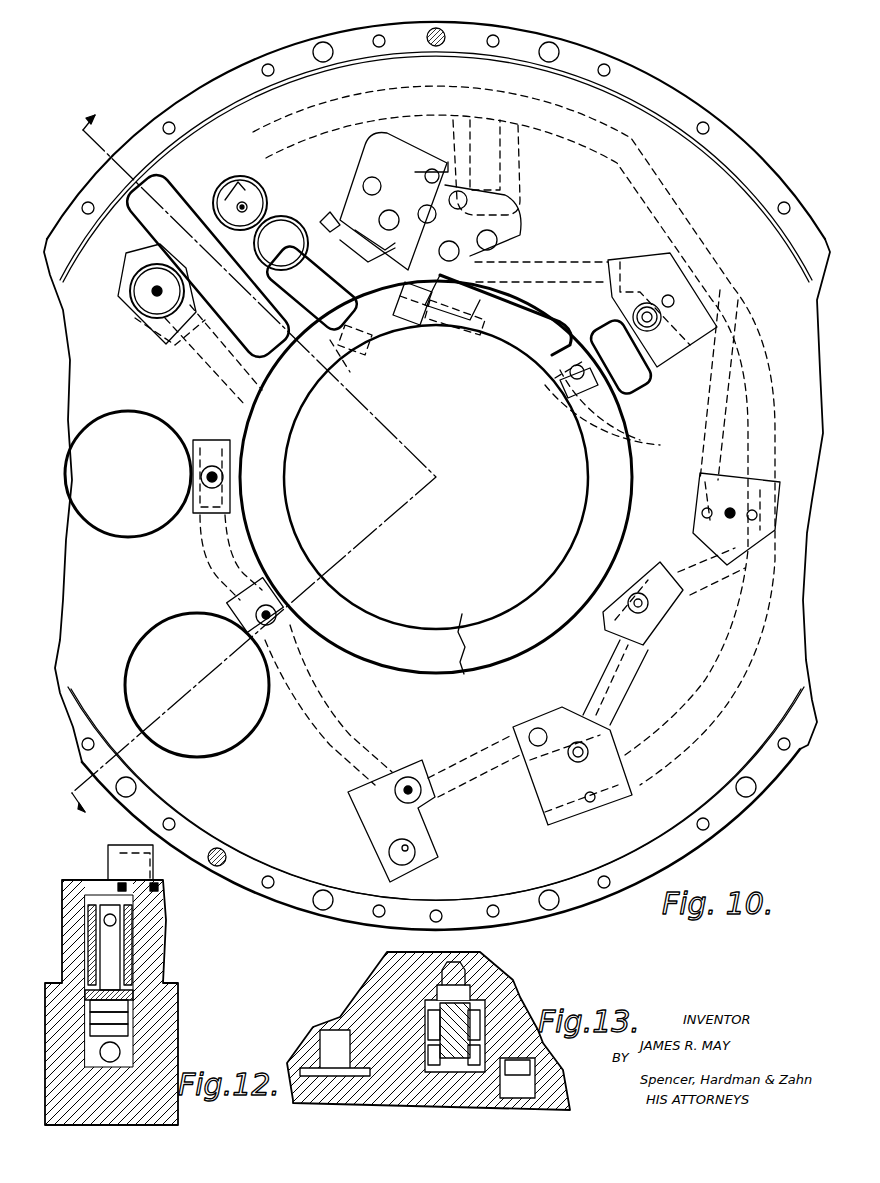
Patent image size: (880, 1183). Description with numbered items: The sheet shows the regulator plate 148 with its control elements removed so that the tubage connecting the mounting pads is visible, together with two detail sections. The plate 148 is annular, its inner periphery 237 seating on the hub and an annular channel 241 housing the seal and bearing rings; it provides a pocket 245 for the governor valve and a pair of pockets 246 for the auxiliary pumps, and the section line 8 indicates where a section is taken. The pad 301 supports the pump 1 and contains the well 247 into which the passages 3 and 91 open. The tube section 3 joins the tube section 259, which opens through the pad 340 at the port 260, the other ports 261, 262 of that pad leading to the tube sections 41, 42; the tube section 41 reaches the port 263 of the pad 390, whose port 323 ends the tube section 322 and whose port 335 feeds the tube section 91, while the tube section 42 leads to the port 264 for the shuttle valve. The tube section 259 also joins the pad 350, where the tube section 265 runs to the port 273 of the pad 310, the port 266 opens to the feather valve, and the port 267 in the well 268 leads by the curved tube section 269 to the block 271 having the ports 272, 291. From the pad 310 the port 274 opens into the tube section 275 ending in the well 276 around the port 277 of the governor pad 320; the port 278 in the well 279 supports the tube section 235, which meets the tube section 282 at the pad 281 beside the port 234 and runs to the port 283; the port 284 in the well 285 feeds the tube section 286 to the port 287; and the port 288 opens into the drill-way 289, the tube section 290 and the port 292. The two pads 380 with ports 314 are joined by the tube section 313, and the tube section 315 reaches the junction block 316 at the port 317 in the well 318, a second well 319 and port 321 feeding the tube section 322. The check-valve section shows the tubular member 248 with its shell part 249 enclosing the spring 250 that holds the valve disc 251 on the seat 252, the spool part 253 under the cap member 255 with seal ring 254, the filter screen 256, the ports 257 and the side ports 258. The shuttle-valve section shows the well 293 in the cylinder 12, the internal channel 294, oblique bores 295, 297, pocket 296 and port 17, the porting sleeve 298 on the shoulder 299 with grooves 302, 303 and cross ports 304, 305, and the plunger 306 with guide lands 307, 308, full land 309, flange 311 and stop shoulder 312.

In FIG. 10, the regulator plate 148 is at (635, 112).
In FIG. 10, the section line 8- 8 is at (254, 466).
In FIG. 10, the tube section 275 is at (376, 90).
In FIG. 10, the well 276 is at (242, 202).
In FIG. 10, the pad 320 is at (228, 190).
In FIG. 10, the port 277 is at (232, 205).
In FIG. 10, the port 283 is at (365, 178).
In FIG. 13, the port 283 is at (330, 1090).
In FIG. 10, the port 292 is at (432, 169).
In FIG. 13, the port 292 is at (455, 1098).
In FIG. 10, the tube section 286 is at (330, 215).
In FIG. 10, the port 287 is at (395, 212).
In FIG. 10, the port 264 is at (462, 196).
In FIG. 13, the port 264 is at (555, 1085).
In FIG. 10, the mounting pad 310 is at (520, 212).
In FIG. 13, the mounting pad 310 is at (365, 1095).
In FIG. 10, the pocket 245 is at (150, 228).
In FIG. 10, the port 288 is at (380, 240).
In FIG. 10, the drill-way 289 is at (372, 252).
In FIG. 10, the port 274 is at (493, 238).
In FIG. 10, the port 273 is at (455, 252).
In FIG. 10, the tube section 265 is at (572, 262).
In FIG. 10, the pad 350 is at (630, 258).
In FIG. 10, the port 266 is at (670, 298).
In FIG. 10, the port 267 is at (660, 310).
In FIG. 10, the well 268 is at (660, 318).
In FIG. 10, the tube section 42 is at (740, 355).
In FIG. 10, the well 279 is at (132, 292).
In FIG. 10, the well 285 is at (290, 262).
In FIG. 10, the port 284 is at (299, 287).
In FIG. 10, the port 278 is at (135, 325).
In FIG. 10, the tube section 282 is at (345, 312).
In FIG. 10, the pad 281 is at (360, 345).
In FIG. 10, the port 234 is at (342, 372).
In FIG. 10, the tube section 290 is at (470, 330).
In FIG. 10, the port 291 is at (500, 345).
In FIG. 10, the port 272 is at (552, 378).
In FIG. 10, the block 271 is at (585, 392).
In FIG. 10, the tube section 269 is at (655, 425).
In FIG. 10, the tube section 259 is at (762, 425).
In FIG. 10, the tube section 235 is at (217, 377).
In FIG. 10, the pads 380 is at (210, 445).
In FIG. 10, the ports 314 is at (223, 475).
In FIG. 10, the pockets 246 is at (112, 540).
In FIG. 10, the tube section 313 is at (200, 548).
In FIG. 10, the inner periphery 237 is at (405, 627).
In FIG. 10, the annular channel 241 is at (462, 614).
In FIG. 10, the tube section 315 is at (330, 718).
In FIG. 10, the port 321 is at (412, 782).
In FIG. 10, the tube section 322 is at (478, 745).
In FIG. 10, the port 323 is at (540, 730).
In FIG. 10, the port 335 is at (588, 750).
In FIG. 10, the pad 390 is at (530, 762).
In FIG. 10, the port 263 is at (592, 802).
In FIG. 10, the tube section 91 is at (617, 690).
In FIG. 10, the tube section 41 is at (720, 735).
In FIG. 10, the tube section 3 is at (705, 572).
In FIG. 10, the well 247 is at (637, 590).
In FIG. 12, the well 247 is at (120, 1050).
In FIG. 10, the pad 301 is at (665, 608).
In FIG. 12, the pad 301 is at (145, 1065).
In FIG. 10, the pad 340 is at (775, 480).
In FIG. 10, the port 262 is at (703, 510).
In FIG. 10, the port 261 is at (730, 507).
In FIG. 10, the port 260 is at (756, 518).
In FIG. 10, the junction block 316 is at (365, 820).
In FIG. 10, the well 319 is at (418, 798).
In FIG. 10, the port 317 is at (410, 855).
In FIG. 10, the well 318 is at (402, 865).
In FIG. 12, the pump 1 is at (166, 925).
In FIG. 12, the seal ring 254 is at (105, 848).
In FIG. 12, the cap member 255 is at (78, 868).
In FIG. 12, the filter screen 256 is at (80, 882).
In FIG. 12, the spool part 253 is at (158, 888).
In FIG. 12, the ports 257 is at (128, 945).
In FIG. 12, the tubular member 248 is at (125, 960).
In FIG. 12, the seat 252 is at (130, 996).
In FIG. 12, the valve disc 251 is at (128, 1006).
In FIG. 12, the spring 250 is at (128, 1018).
In FIG. 12, the shell part 249 is at (128, 1030).
In FIG. 12, the side ports 258 is at (70, 1030).
In FIG. 13, the cylinder 12 is at (480, 955).
In FIG. 13, the cross port 304 is at (420, 1048).
In FIG. 13, the porting sleeve 298 is at (448, 1068).
In FIG. 13, the shoulder 299 is at (515, 975).
In FIG. 13, the pocket 296 is at (545, 1058).
In FIG. 13, the guide land 308 is at (385, 985).
In FIG. 13, the cross port 305 is at (400, 990).
In FIG. 13, the shoulder 312 is at (430, 985).
In FIG. 13, the flange 311 is at (500, 965).
In FIG. 13, the groove 303 is at (520, 982).
In FIG. 13, the land 309 is at (400, 1010).
In FIG. 13, the well 293 is at (420, 1010).
In FIG. 13, the oblique bore 297 is at (420, 1035).
In FIG. 13, the oblique bore 295 is at (520, 1010).
In FIG. 13, the plunger 306 is at (478, 1022).
In FIG. 13, the groove 302 is at (400, 1085).
In FIG. 13, the guide land 307 is at (480, 1098).
In FIG. 13, the internal channel 294 is at (510, 1098).
In FIG. 13, the port 17 is at (290, 1038).